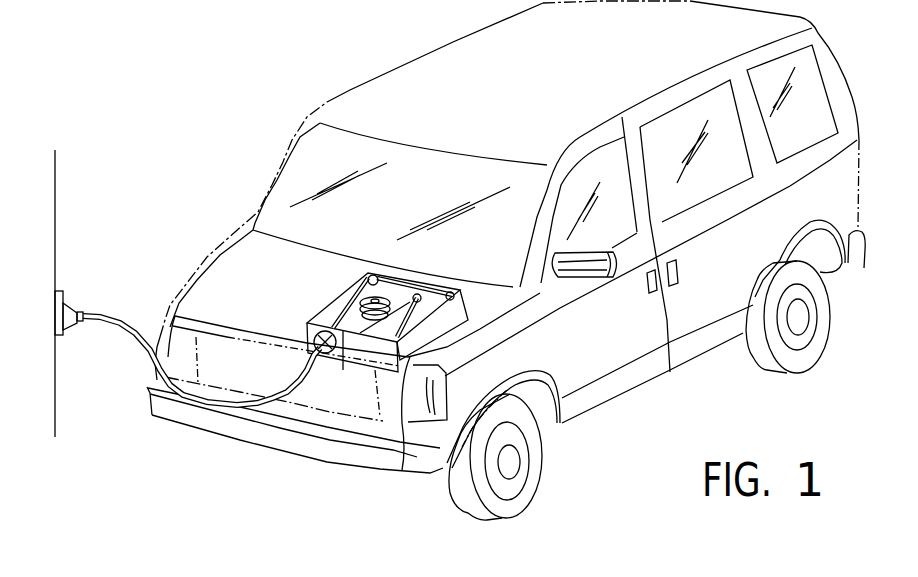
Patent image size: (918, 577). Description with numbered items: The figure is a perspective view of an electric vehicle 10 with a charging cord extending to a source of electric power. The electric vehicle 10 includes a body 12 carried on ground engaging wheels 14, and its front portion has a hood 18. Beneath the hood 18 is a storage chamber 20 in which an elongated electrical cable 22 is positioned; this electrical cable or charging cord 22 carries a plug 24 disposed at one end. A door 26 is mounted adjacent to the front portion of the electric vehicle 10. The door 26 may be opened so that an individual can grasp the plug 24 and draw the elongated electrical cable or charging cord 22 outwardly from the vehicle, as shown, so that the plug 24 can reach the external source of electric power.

The electric vehicle 10 is at (657, 389).
The body 12 is at (864, 268).
The ground engaging wheels 14 is at (507, 512).
The hood 18 is at (197, 300).
The storage chamber 20 is at (402, 470).
The elongated electrical cable 22 is at (223, 407).
The plug 24 is at (77, 322).
The door 26 is at (297, 372).